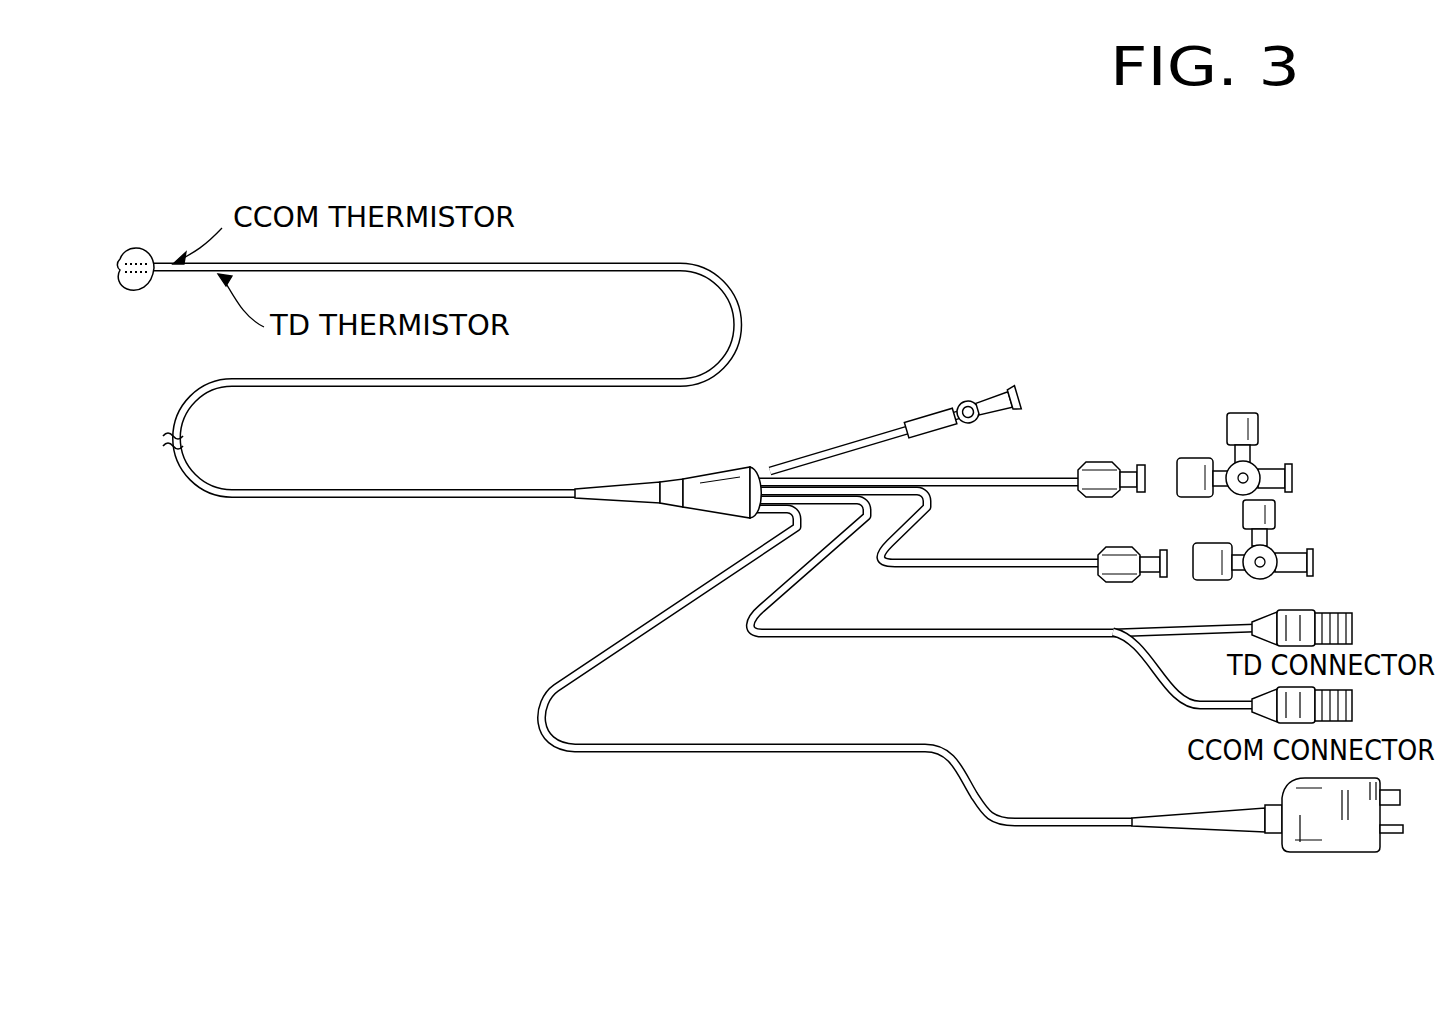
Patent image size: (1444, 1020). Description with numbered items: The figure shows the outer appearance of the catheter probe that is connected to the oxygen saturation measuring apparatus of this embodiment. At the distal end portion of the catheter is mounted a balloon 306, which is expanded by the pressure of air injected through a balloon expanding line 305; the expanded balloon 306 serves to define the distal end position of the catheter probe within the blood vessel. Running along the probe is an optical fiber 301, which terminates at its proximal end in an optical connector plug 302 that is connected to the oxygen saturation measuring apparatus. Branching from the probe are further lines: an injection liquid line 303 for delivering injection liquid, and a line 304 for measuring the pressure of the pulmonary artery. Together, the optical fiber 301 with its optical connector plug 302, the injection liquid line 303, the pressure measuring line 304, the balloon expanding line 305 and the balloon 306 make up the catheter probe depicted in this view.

The optical fiber 301 is at (808, 755).
The optical connector plug 302 is at (1325, 845).
The injection liquid line 303 is at (935, 642).
The line for measuring the pressure of the pulmonary artery 304 is at (920, 570).
The balloon expanding line 305 is at (892, 437).
The balloon 306 is at (132, 289).